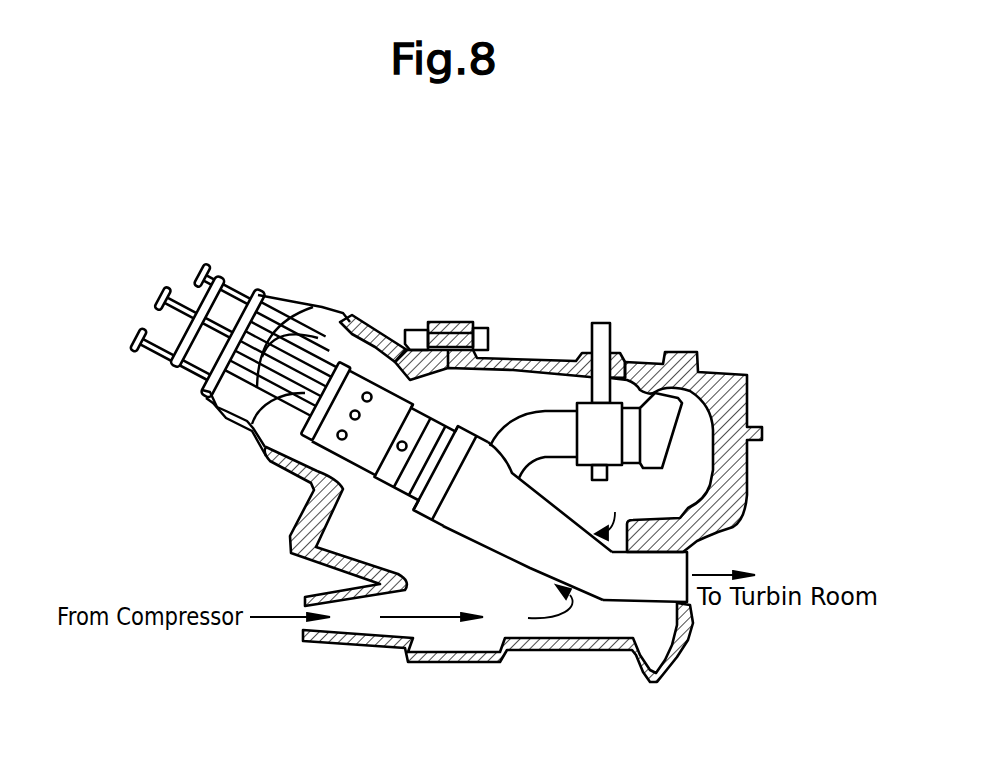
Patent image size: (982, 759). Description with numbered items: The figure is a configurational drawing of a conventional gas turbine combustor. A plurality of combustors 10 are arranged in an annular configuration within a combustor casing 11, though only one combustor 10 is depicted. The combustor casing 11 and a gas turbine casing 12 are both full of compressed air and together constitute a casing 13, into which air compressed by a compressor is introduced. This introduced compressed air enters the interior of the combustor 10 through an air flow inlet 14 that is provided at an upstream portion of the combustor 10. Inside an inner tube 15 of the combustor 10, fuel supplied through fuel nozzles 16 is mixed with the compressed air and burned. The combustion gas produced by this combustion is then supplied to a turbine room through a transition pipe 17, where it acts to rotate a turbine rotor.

The combustor 10 is at (388, 378).
The combustor casing 11 is at (297, 300).
The gas turbine casing 12 is at (546, 362).
The casing 13 is at (487, 390).
The air flow inlet 14 is at (252, 425).
The inner tube 15 is at (387, 472).
The fuel nozzles 16 is at (323, 338).
The transition pipe 17 is at (517, 548).